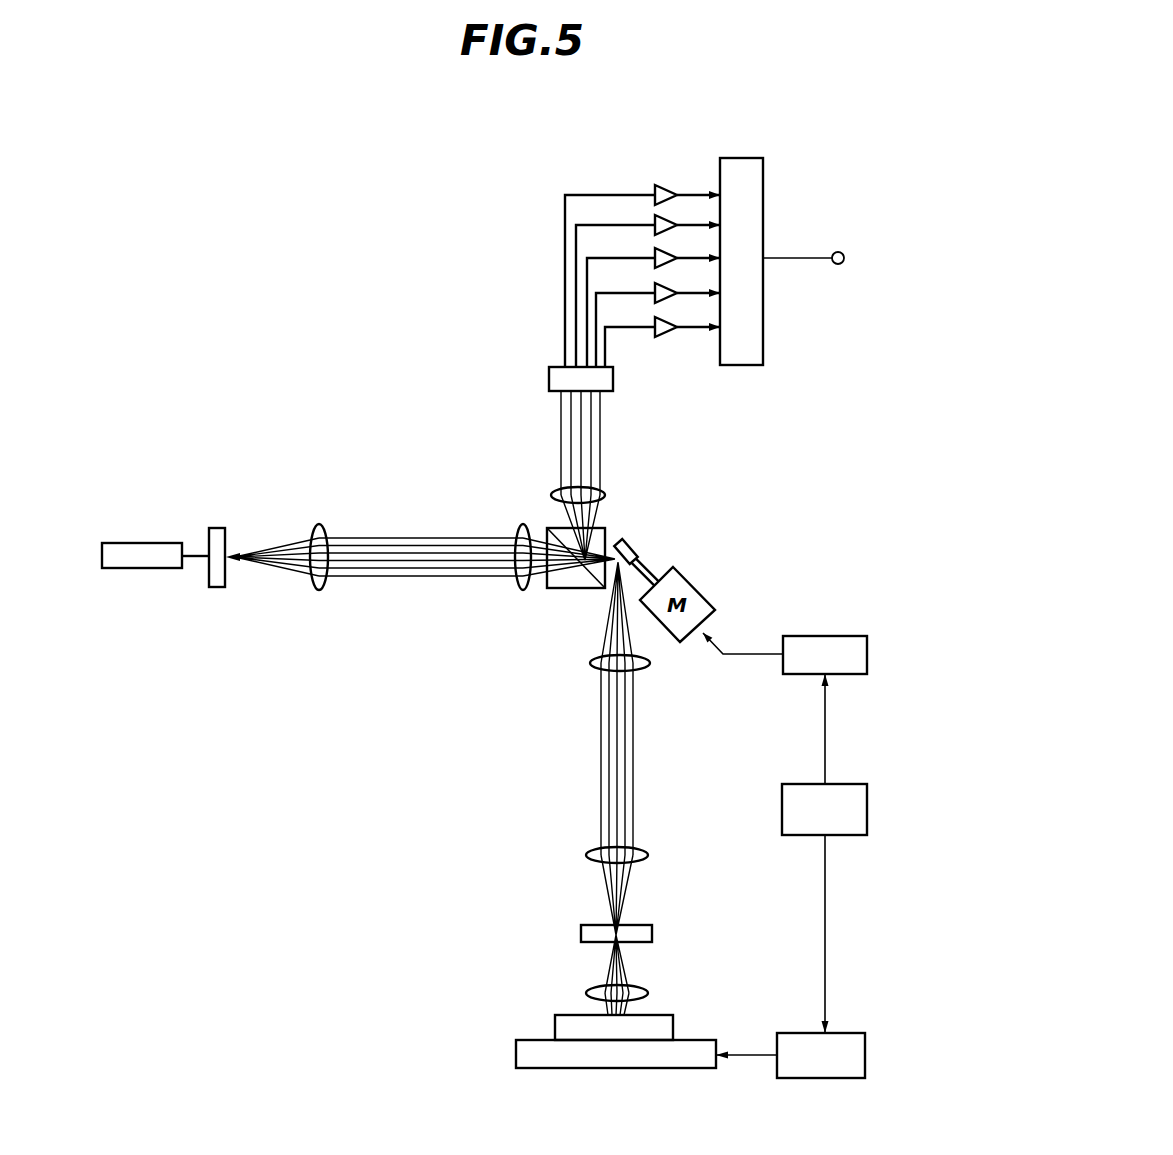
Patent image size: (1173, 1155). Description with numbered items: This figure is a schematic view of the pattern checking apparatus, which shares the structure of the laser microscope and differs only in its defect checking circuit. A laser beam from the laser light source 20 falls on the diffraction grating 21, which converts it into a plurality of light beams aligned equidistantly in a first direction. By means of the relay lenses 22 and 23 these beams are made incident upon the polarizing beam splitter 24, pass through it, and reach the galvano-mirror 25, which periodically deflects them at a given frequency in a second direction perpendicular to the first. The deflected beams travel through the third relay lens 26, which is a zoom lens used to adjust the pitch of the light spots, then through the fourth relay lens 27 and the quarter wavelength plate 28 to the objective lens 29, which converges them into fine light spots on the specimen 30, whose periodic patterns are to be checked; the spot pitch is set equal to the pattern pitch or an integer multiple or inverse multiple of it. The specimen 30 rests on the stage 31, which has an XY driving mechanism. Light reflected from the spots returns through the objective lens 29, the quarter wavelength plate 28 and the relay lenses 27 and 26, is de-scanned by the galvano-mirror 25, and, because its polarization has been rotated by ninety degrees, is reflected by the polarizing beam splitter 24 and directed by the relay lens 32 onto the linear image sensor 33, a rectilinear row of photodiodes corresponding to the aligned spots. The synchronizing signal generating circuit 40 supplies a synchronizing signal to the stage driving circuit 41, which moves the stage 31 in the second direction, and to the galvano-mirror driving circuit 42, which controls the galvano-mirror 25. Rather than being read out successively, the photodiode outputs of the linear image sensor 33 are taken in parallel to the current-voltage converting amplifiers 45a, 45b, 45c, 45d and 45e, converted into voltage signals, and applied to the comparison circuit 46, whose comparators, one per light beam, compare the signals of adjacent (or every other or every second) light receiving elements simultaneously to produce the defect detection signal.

The laser light source 20 is at (163, 543).
The diffraction grating 21 is at (218, 528).
The relay lens 22 is at (320, 525).
The relay lens 23 is at (520, 525).
The polarizing beam splitter 24 is at (550, 528).
The galvano-mirror 25 is at (632, 540).
The third relay lens 26 is at (592, 663).
The fourth relay lens 27 is at (586, 855).
The quarter wavelength plate 28 is at (581, 930).
The objective lens 29 is at (588, 993).
The specimen 30 is at (555, 1022).
The stage 31 is at (516, 1055).
The relay lens 32 is at (605, 494).
The linear image sensor 33 is at (613, 383).
The synchronizing signal generating circuit 40 is at (837, 784).
The stage driving circuit 41 is at (832, 1033).
The galvano-mirror driving circuit 42 is at (798, 636).
The current-voltage converting amplifier 45a is at (655, 193).
The current-voltage converting amplifier 45b is at (655, 223).
The current-voltage converting amplifier 45c is at (655, 256).
The current-voltage converting amplifier 45d is at (655, 291).
The current-voltage converting amplifier 45e is at (655, 325).
The comparison circuit 46 is at (738, 158).